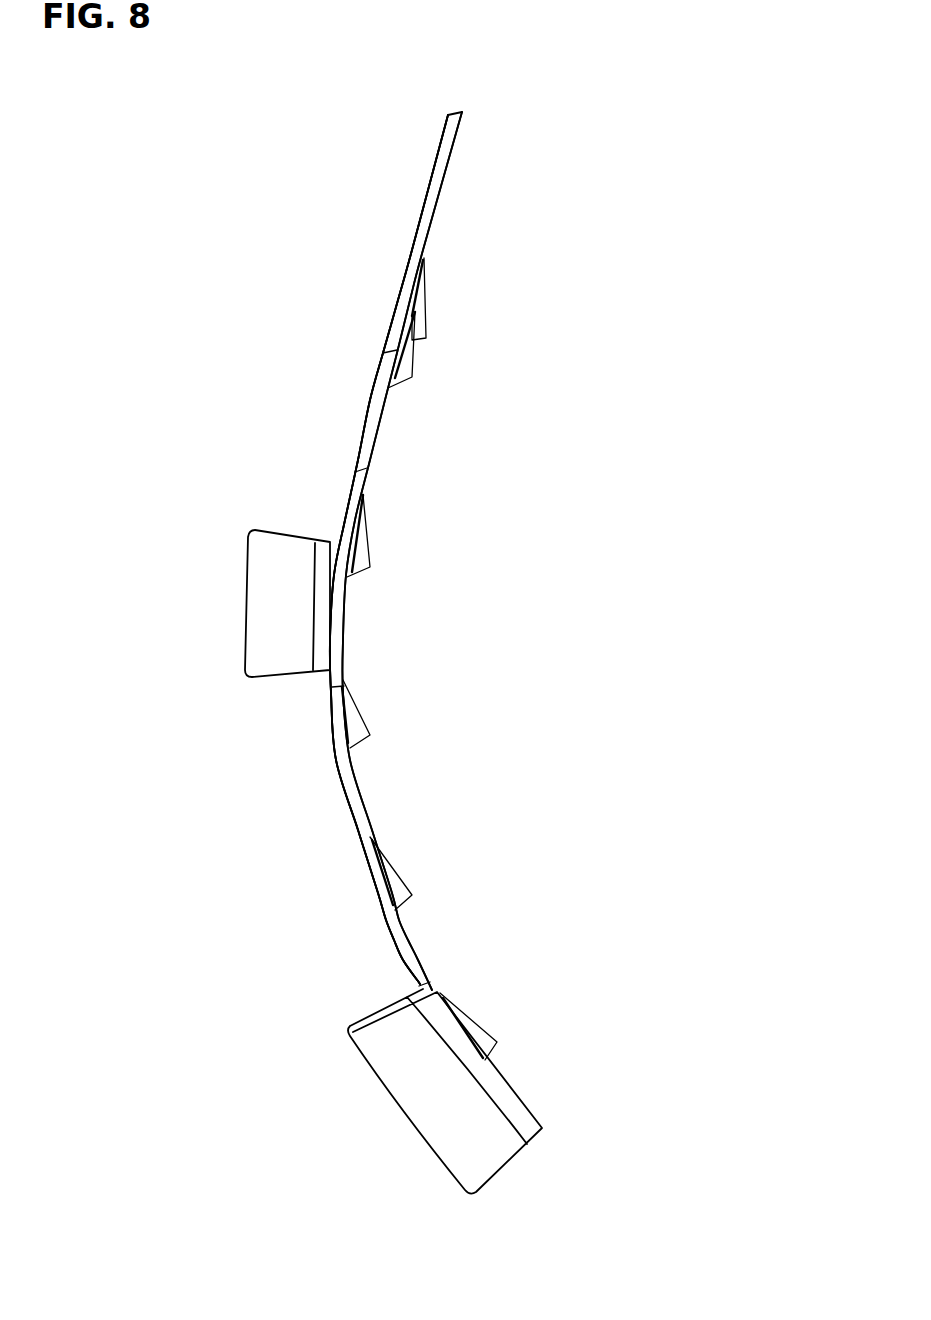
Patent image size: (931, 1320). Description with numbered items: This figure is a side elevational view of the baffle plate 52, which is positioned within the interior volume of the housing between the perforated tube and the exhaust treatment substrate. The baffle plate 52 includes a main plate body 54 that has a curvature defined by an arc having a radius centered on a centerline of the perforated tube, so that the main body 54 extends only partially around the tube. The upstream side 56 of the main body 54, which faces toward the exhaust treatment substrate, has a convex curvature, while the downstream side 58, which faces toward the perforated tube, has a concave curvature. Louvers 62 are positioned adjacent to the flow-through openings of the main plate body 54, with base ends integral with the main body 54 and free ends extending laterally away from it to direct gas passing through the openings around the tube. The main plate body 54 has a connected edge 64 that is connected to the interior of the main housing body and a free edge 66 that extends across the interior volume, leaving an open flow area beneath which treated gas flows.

The baffle plate 52 is at (405, 207).
The main plate body 54 is at (363, 428).
The upstream side 56 is at (271, 746).
The downstream side 58 is at (389, 758).
The louvers 62 is at (412, 375).
The connected edge 64 is at (456, 110).
The free edge 66 is at (523, 1143).